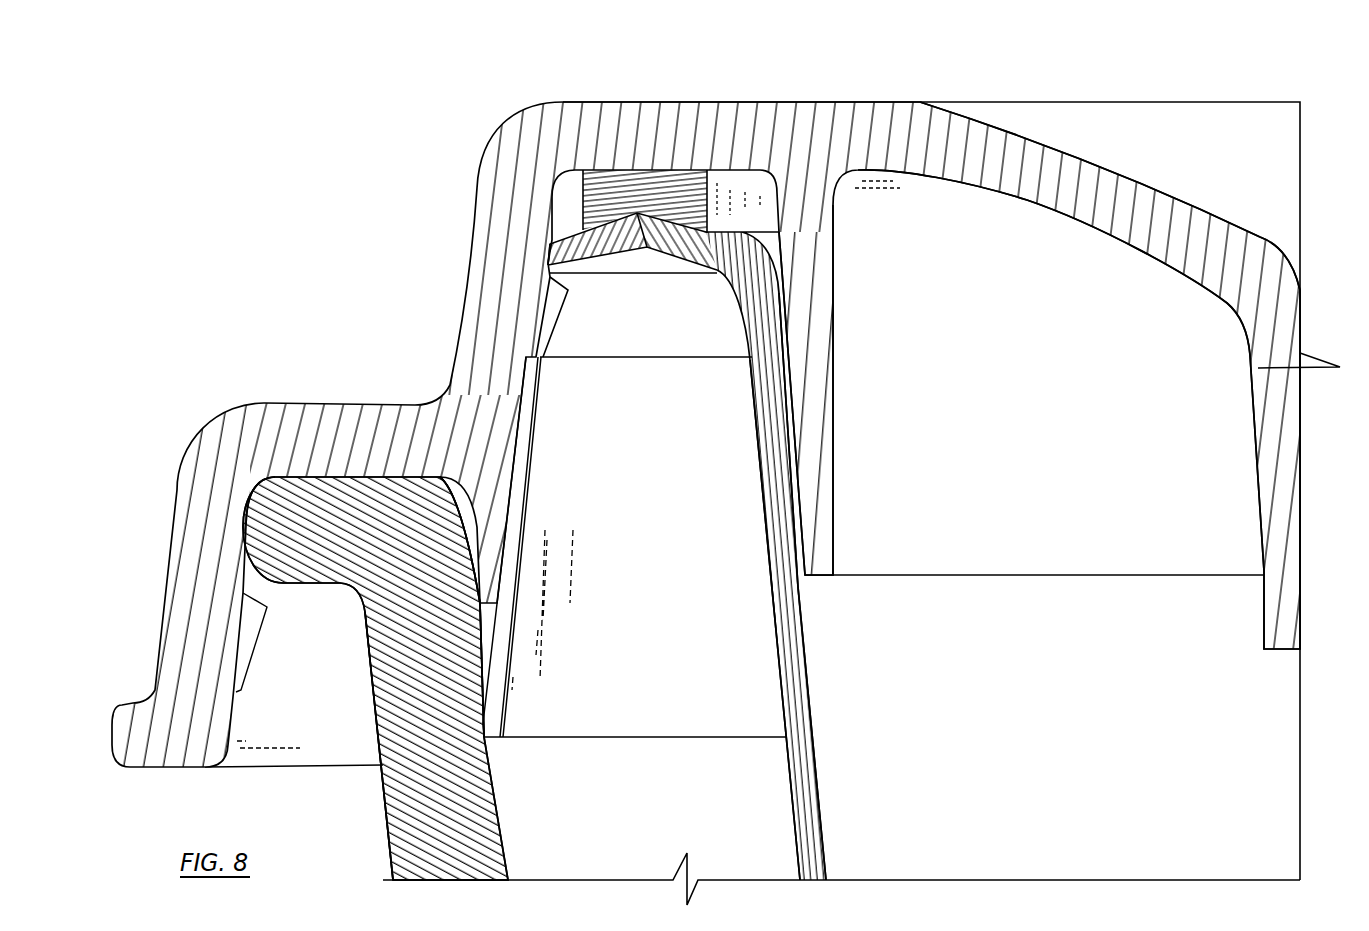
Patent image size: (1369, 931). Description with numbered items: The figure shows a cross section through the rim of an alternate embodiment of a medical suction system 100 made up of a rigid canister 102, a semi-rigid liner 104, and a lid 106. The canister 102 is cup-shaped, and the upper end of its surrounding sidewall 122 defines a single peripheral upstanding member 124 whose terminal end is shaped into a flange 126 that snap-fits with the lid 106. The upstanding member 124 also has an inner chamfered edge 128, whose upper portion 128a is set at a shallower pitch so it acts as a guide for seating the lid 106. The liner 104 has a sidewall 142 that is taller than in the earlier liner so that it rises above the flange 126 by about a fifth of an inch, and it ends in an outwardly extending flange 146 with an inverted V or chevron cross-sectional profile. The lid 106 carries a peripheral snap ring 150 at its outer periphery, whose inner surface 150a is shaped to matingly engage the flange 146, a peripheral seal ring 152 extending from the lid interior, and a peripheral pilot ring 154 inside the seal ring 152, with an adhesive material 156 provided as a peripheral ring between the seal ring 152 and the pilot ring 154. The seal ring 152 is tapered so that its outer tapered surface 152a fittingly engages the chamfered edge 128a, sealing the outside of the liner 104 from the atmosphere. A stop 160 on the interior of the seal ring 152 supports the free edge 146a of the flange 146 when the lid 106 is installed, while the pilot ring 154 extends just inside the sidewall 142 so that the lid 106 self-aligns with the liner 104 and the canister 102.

The medical suction system 100 is at (668, 67).
The rigid canister 102 is at (369, 657).
The semi-rigid liner 104 is at (779, 654).
The lid 106 is at (1223, 178).
The sidewall 122 is at (377, 710).
The peripheral upstanding member 124 is at (432, 640).
The flange 126 is at (379, 536).
The inner chamfered edge 128 is at (478, 660).
The upper portion of the edge 128a is at (481, 537).
The sidewall of the liner 142 is at (790, 435).
The flange 146 is at (737, 237).
The free edge of the flange 146a is at (548, 260).
The peripheral snap ring 150 is at (208, 670).
The inner surface of the snap ring 150a is at (248, 523).
The peripheral seal ring 152 is at (510, 437).
The outer tapered surface 152a is at (476, 597).
The peripheral pilot ring 154 is at (828, 343).
The adhesive material 156 is at (662, 186).
The stop 160 is at (552, 330).